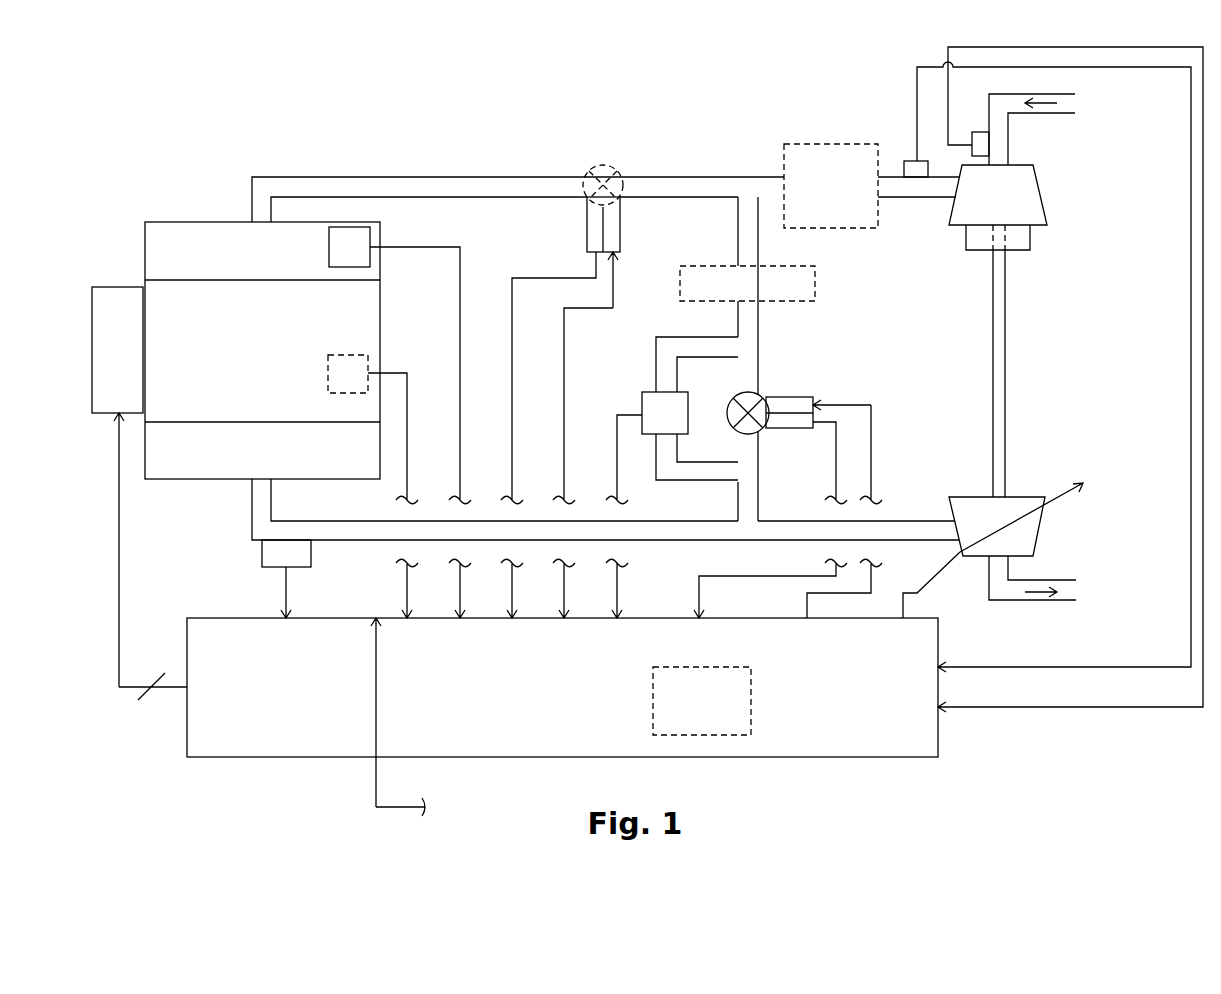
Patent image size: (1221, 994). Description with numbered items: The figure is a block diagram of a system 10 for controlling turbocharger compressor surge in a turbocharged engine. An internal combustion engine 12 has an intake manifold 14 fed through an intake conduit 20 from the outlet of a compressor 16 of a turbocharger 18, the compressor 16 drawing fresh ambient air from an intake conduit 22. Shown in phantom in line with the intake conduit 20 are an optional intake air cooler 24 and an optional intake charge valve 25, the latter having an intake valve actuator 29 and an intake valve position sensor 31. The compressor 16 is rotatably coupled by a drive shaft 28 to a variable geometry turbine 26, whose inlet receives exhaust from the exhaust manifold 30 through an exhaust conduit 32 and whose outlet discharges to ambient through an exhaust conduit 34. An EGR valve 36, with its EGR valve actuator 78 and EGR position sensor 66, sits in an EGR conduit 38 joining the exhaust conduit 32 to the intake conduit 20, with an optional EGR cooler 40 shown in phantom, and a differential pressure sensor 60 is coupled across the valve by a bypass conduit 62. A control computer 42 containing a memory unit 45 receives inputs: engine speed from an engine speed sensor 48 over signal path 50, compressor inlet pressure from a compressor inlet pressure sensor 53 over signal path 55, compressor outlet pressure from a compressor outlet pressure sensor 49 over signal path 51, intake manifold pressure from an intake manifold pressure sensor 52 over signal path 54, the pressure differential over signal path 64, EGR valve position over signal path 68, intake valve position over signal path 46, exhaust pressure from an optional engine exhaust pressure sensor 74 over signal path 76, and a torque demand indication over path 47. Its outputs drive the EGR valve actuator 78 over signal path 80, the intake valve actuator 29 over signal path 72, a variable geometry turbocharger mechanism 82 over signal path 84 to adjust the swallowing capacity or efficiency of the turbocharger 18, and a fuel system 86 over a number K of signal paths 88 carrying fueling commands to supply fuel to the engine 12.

The system 10 is at (226, 126).
The internal combustion engine 12 is at (380, 293).
The intake manifold 14 is at (177, 222).
The compressor 16 is at (1043, 195).
The turbocharger 18 is at (1074, 320).
The intake conduit 20 is at (400, 177).
The intake conduit 22 is at (1055, 113).
The intake air cooler 24 is at (855, 228).
The intake charge valve 25 is at (603, 165).
The variable geometry turbocharger turbine 26 is at (972, 497).
The drive shaft 28 is at (1005, 372).
The intake valve actuator 29 is at (620, 237).
The exhaust manifold 30 is at (182, 479).
The intake valve position sensor 31 is at (587, 237).
The exhaust conduit 32 is at (370, 540).
The exhaust conduit 34 is at (1057, 602).
The EGR valve 36 is at (755, 392).
The EGR conduit 38 is at (758, 498).
The EGR cooler 40 is at (815, 295).
The control computer 42 is at (938, 740).
The memory unit 45 is at (653, 720).
The signal path 46 is at (512, 382).
The path 47 is at (372, 790).
The engine speed sensor 48 is at (348, 355).
The compressor outlet pressure sensor 49 is at (906, 161).
The signal path 50 is at (395, 373).
The signal path 51 is at (1191, 445).
The intake manifold pressure sensor 52 is at (348, 227).
The compressor inlet pressure sensor 53 is at (980, 132).
The signal path 54 is at (417, 247).
The signal path 55 is at (948, 50).
The differential pressure sensor 60 is at (642, 400).
The bypass conduit 62 is at (710, 482).
The signal path 64 is at (625, 592).
The EGR position sensor 66 is at (785, 430).
The signal path 68 is at (775, 576).
The signal path 72 is at (566, 335).
The engine exhaust pressure sensor 74 is at (262, 555).
The signal path 76 is at (286, 592).
The EGR valve actuator 78 is at (797, 388).
The signal path 80 is at (873, 413).
The variable geometry turbocharger mechanism 82 is at (1062, 497).
The signal path 84 is at (935, 585).
The fuel system 86 is at (120, 287).
The signal paths 88 is at (119, 583).